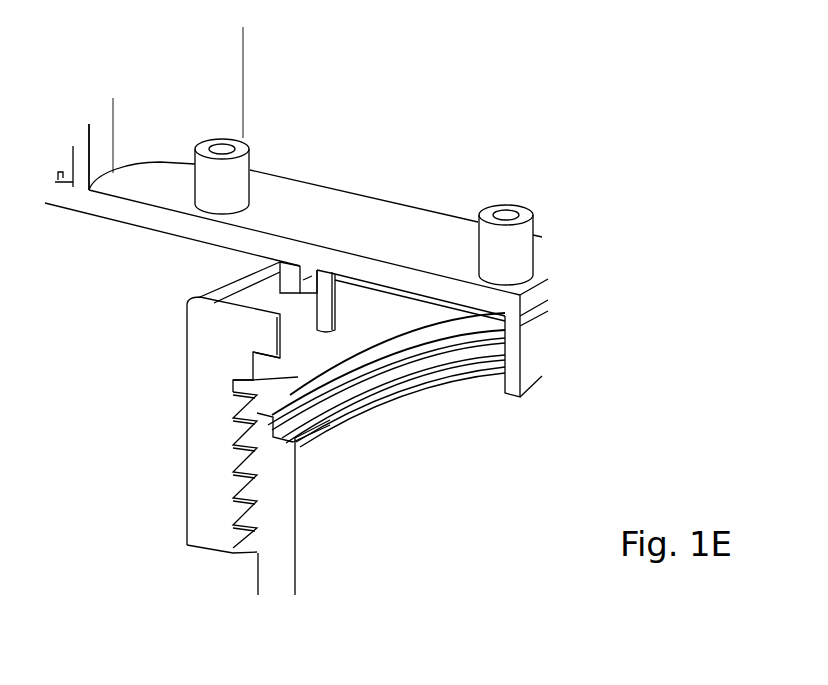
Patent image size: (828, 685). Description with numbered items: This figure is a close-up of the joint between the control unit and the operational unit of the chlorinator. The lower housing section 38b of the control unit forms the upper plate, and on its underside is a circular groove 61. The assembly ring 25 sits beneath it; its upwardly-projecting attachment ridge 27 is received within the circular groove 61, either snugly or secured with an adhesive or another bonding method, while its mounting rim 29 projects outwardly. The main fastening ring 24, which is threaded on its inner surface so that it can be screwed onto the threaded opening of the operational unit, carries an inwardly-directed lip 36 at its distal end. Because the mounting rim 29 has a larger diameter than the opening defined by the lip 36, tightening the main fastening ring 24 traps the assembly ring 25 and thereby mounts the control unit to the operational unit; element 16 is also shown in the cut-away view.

The lower housing section 38b is at (315, 208).
The circular groove 61 is at (318, 263).
The attachment ridge 27 is at (285, 268).
The lip 36 is at (260, 340).
The mounting rim 29 is at (270, 364).
The main fastening ring 24 is at (207, 475).
The threaded sleeve 16 is at (277, 503).
The assembly ring 25 is at (300, 318).